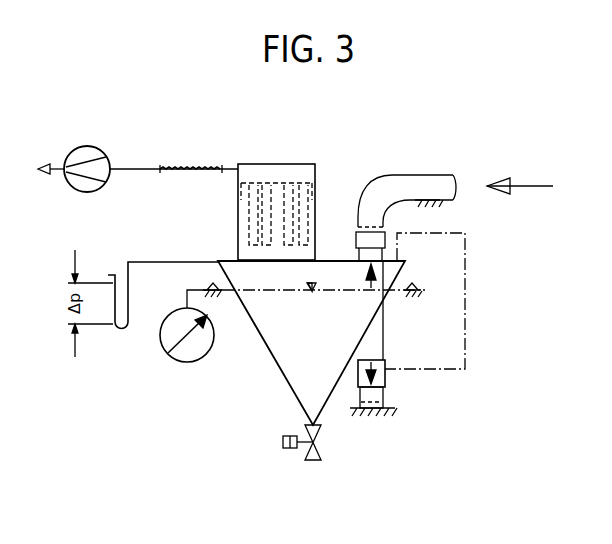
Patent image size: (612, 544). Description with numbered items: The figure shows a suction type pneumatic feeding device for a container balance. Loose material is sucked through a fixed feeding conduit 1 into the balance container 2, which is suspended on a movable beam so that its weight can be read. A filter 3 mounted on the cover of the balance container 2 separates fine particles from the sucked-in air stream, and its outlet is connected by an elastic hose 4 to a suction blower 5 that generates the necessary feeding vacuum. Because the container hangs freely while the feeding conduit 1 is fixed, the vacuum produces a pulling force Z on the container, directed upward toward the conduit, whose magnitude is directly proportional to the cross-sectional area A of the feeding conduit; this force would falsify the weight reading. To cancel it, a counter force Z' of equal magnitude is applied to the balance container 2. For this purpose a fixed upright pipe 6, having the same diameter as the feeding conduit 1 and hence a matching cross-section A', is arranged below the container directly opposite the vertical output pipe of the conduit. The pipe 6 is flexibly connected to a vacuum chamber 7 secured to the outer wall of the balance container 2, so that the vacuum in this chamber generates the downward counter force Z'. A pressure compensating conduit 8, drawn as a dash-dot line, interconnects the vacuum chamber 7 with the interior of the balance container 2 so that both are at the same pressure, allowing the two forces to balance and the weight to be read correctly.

The feeding conduit 1 is at (428, 168).
The balance container 2 is at (287, 355).
The filter 3 is at (289, 165).
The hose 4 is at (202, 168).
The suction blower 5 is at (91, 151).
The upright pipe 6 is at (385, 407).
The vacuum chamber 7 is at (380, 380).
The pressure compensating conduit 8 is at (468, 290).
The cross-sectional area of the feeding conduit A is at (356, 226).
The pulling force Z is at (350, 256).
The counter force Z' is at (397, 343).
The outlet cross-section A' is at (390, 395).